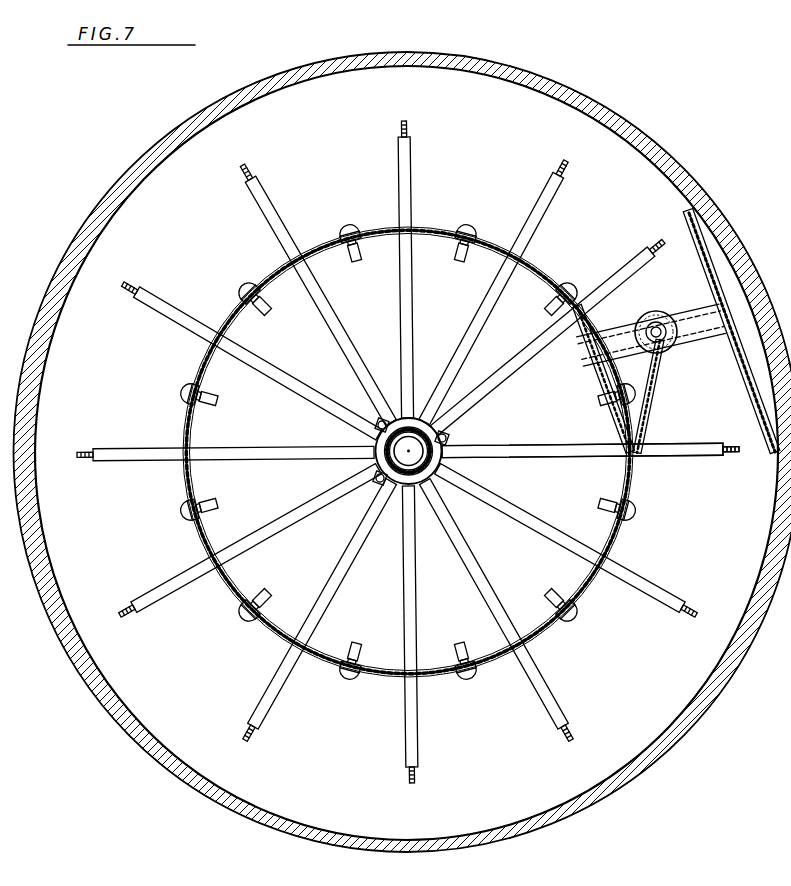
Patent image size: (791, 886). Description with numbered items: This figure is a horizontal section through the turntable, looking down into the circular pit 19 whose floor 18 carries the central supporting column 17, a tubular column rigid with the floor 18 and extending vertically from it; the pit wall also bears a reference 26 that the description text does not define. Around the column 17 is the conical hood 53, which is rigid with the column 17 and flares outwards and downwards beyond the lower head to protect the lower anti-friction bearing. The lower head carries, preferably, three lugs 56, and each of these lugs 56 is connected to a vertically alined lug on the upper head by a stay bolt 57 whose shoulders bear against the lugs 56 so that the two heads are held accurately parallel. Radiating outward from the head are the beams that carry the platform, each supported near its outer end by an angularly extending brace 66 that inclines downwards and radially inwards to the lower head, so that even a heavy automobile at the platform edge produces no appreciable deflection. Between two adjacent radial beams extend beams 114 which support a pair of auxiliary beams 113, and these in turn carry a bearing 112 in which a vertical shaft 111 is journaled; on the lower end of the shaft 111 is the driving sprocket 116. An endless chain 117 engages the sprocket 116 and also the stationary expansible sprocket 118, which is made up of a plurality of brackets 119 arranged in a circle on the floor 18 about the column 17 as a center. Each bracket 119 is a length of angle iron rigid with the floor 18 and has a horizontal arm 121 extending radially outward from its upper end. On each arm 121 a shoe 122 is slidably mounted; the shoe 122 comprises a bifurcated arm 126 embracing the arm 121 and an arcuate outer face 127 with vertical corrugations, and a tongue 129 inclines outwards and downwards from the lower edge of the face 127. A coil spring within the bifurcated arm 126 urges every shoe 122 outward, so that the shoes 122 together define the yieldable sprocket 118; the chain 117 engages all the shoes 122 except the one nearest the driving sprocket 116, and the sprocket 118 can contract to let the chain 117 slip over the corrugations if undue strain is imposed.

The central supporting column 17 is at (484, 433).
The floor 18 is at (486, 150).
The circular pit 19 is at (468, 72).
The drum lining 26 is at (512, 81).
The conical hood 53 is at (412, 420).
The lugs 56 is at (381, 480).
The stay bolt 57 is at (449, 444).
The angularly extending brace 66 is at (683, 459).
The vertical shaft 111 is at (651, 352).
The bearing 112 is at (671, 345).
The auxiliary beams 113 is at (713, 340).
The beams 114 is at (749, 390).
The sprocket 116 is at (660, 311).
The endless chain 117 is at (586, 586).
The stationary expansible sprocket 118 is at (250, 624).
The brackets 119 is at (457, 262).
The horizontal arm 121 is at (262, 594).
The shoe 122 is at (470, 676).
The bifurcated arm 126 is at (561, 601).
The arcuate outer face 127 is at (461, 672).
The tongue 129 is at (356, 663).